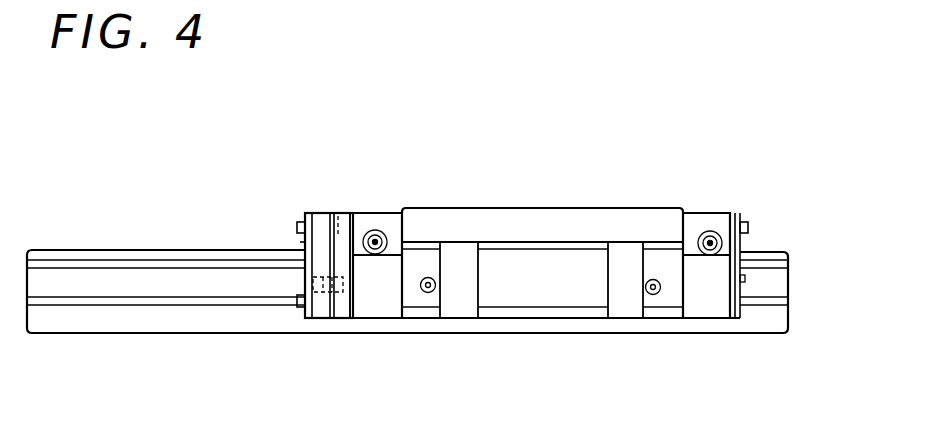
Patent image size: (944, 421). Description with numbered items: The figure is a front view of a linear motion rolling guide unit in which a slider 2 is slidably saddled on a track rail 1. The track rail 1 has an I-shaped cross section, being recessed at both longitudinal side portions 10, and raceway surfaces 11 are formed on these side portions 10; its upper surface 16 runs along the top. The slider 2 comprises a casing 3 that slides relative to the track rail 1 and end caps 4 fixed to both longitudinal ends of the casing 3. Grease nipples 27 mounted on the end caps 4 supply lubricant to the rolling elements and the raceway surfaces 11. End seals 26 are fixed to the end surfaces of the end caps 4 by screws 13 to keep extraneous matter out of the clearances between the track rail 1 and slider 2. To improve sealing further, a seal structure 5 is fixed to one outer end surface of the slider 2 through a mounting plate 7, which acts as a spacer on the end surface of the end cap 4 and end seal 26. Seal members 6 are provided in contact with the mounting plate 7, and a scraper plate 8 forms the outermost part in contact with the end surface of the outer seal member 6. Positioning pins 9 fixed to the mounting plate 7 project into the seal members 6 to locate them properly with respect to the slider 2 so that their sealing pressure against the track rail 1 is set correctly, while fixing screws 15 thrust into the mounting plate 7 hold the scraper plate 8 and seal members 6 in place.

The track rail 1 is at (171, 249).
The slider 2 is at (562, 209).
The casing 3 is at (474, 212).
The end cap 4 is at (380, 300).
The seal structure 5 is at (324, 213).
The seal member 6 is at (329, 319).
The mounting plate 7 is at (345, 319).
The scraper plate 8 is at (305, 242).
The positioning pin 9 is at (313, 285).
The longitudinal side portion 10 is at (188, 324).
The raceway surface 11 is at (134, 268).
The screw 13 is at (748, 227).
The fixing screw 15 is at (300, 222).
The upper surface 16 is at (103, 248).
The end seal 26 is at (344, 213).
The grease nipple 27 is at (377, 238).